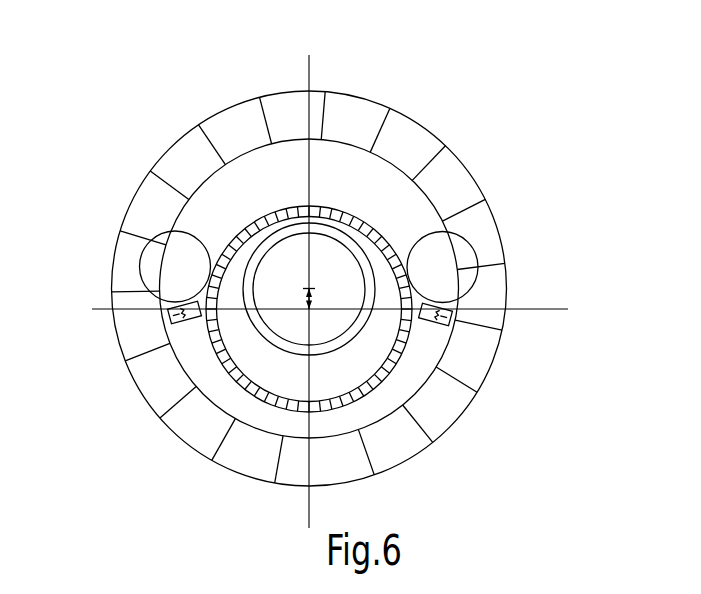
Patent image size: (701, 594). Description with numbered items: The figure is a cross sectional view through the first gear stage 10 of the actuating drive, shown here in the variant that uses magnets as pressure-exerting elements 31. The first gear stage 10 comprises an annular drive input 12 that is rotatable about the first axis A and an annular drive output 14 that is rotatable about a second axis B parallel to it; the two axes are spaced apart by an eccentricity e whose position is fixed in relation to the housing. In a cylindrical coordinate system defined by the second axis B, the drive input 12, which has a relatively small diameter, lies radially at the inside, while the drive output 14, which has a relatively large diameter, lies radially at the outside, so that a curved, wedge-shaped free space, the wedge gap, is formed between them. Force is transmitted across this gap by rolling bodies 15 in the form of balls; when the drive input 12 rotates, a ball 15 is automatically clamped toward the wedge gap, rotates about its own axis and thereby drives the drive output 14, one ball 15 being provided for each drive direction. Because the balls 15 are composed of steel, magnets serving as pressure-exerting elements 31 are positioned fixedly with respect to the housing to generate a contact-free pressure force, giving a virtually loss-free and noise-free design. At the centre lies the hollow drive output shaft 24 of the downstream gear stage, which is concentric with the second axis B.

The first gear stage 10 is at (234, 83).
The drive input 12 is at (395, 369).
The drive output 14 is at (448, 175).
The rolling body 15 is at (438, 258).
The drive output shaft 24 is at (332, 343).
The pressure-exerting elements 31 is at (168, 313).
The first axis A is at (309, 309).
The second axis B is at (309, 288).
The eccentricity e is at (318, 300).